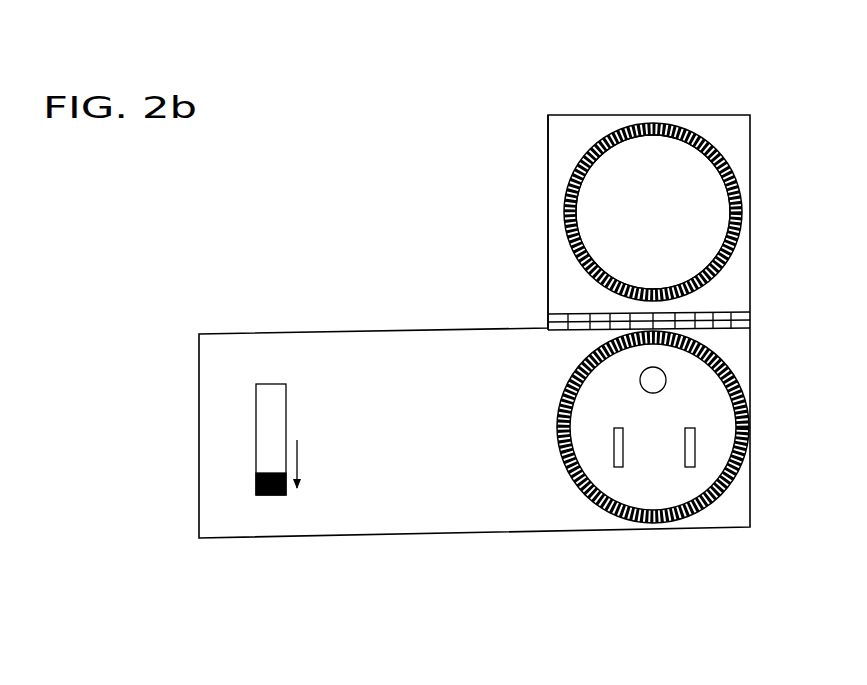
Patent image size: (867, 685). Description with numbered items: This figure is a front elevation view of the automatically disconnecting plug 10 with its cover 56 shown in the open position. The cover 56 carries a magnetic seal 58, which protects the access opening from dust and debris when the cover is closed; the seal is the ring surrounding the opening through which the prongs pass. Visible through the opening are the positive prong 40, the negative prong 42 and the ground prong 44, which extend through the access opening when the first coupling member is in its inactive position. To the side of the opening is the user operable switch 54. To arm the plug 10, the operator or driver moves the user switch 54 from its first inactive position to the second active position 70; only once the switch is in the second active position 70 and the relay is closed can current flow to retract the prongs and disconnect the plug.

The automatically disconnecting plug 10 is at (268, 56).
The positive prong 40 is at (690, 468).
The negative prong 42 is at (618, 468).
The ground prong 44 is at (644, 390).
The user operable switch 54 is at (295, 405).
The cover 56 is at (668, 231).
The magnetic seal 58 is at (568, 390).
The second active position 70 is at (249, 488).